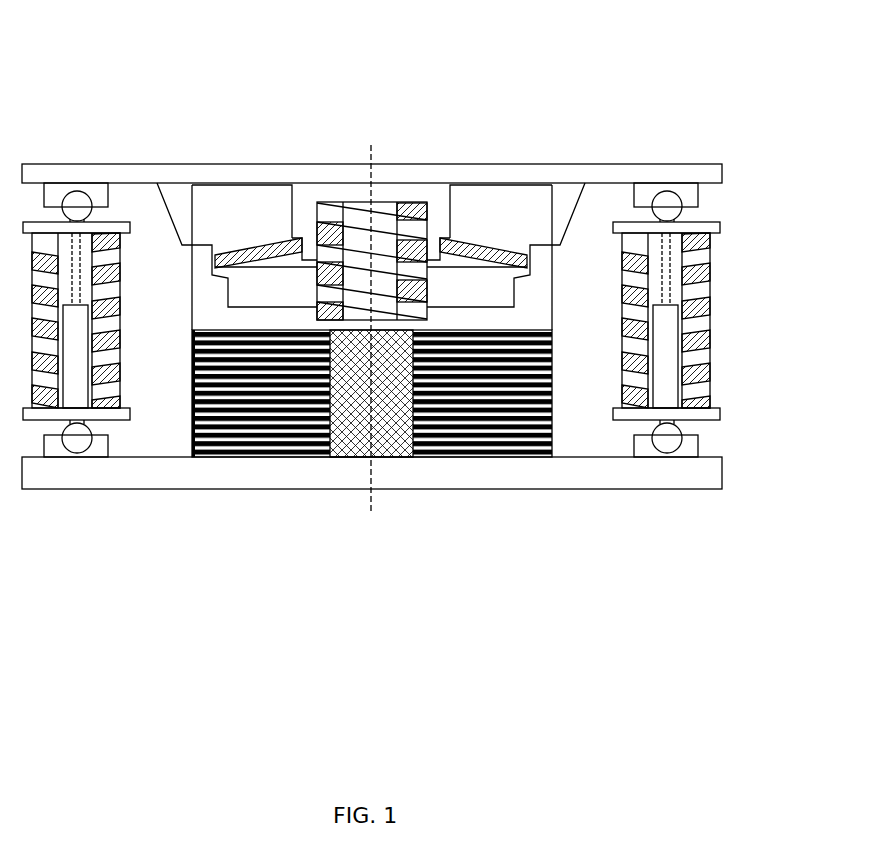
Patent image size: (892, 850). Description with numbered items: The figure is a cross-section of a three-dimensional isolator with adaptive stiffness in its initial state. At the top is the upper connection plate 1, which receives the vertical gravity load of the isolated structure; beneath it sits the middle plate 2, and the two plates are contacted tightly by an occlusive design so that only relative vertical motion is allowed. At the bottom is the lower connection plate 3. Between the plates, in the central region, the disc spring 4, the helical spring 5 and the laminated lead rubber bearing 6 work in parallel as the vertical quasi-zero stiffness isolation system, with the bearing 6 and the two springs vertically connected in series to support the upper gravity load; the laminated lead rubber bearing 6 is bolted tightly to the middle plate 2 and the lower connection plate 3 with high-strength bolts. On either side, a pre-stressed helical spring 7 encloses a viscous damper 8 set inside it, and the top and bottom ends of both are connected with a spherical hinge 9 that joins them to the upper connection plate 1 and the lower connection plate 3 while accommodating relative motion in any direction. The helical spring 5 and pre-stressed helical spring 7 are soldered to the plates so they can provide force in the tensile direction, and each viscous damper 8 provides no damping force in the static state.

The upper connection plate 1 is at (174, 182).
The middle plate 2 is at (531, 305).
The lower connection plate 3 is at (145, 475).
The disc spring 4 is at (286, 258).
The helical spring 5 is at (375, 240).
The laminated lead rubber bearing 6 is at (507, 327).
The pre-stressed helical spring 7 is at (647, 383).
The viscous damper 8 is at (672, 403).
The spherical hinge 9 is at (682, 455).